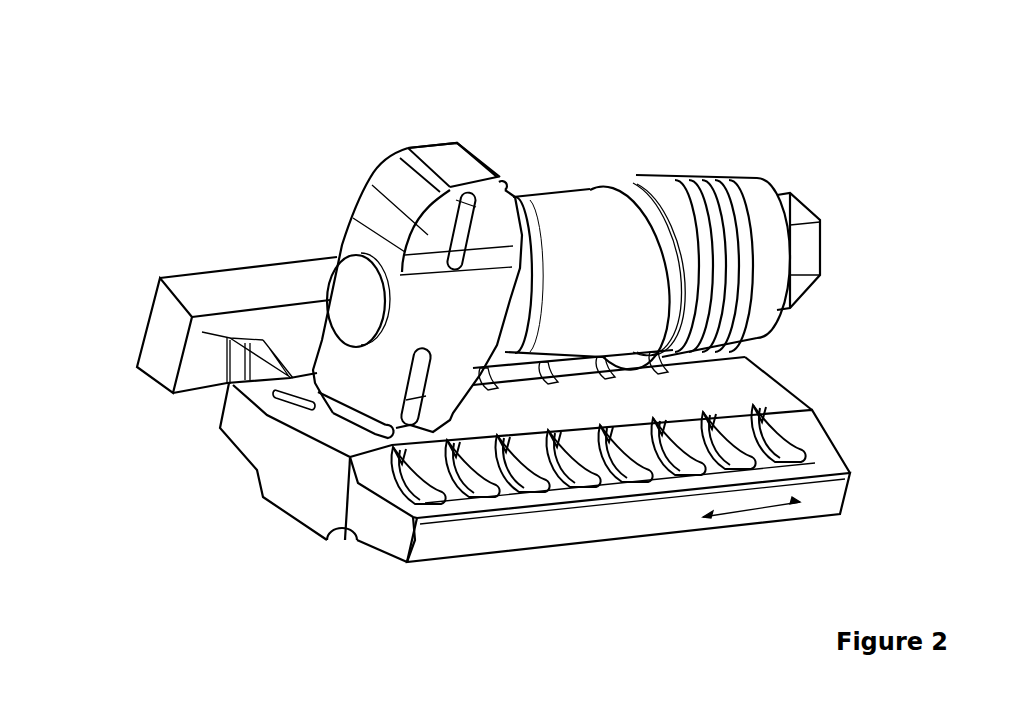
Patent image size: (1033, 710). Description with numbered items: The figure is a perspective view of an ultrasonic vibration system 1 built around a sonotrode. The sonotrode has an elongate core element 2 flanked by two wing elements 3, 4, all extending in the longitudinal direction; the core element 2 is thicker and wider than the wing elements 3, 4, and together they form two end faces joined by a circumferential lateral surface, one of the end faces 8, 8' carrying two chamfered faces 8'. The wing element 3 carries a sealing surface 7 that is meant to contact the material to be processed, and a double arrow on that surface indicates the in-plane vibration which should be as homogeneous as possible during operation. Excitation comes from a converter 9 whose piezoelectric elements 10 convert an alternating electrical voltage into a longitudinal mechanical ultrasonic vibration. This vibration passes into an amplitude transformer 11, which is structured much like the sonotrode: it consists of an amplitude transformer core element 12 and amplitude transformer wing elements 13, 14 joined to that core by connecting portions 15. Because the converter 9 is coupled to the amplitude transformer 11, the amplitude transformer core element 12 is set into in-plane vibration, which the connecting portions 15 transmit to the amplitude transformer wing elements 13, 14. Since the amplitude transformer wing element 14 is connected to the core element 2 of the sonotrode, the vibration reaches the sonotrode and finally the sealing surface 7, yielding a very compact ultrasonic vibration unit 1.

The ultrasonic vibration system 1 is at (869, 194).
The core element 2 is at (285, 500).
The wing element 3 is at (455, 538).
The wing element 4 is at (221, 430).
The sealing surface 7 is at (592, 532).
The end face 8 is at (325, 565).
The chamfered face 8' is at (208, 486).
The converter 9 is at (635, 222).
The piezoelectric elements 10 is at (710, 198).
The amplitude transformer 11 is at (350, 247).
The amplitude transformer core element 12 is at (417, 316).
The amplitude transformer wing element 13 is at (472, 185).
The amplitude transformer wing element 14 is at (398, 432).
The connecting portions 15 is at (380, 168).